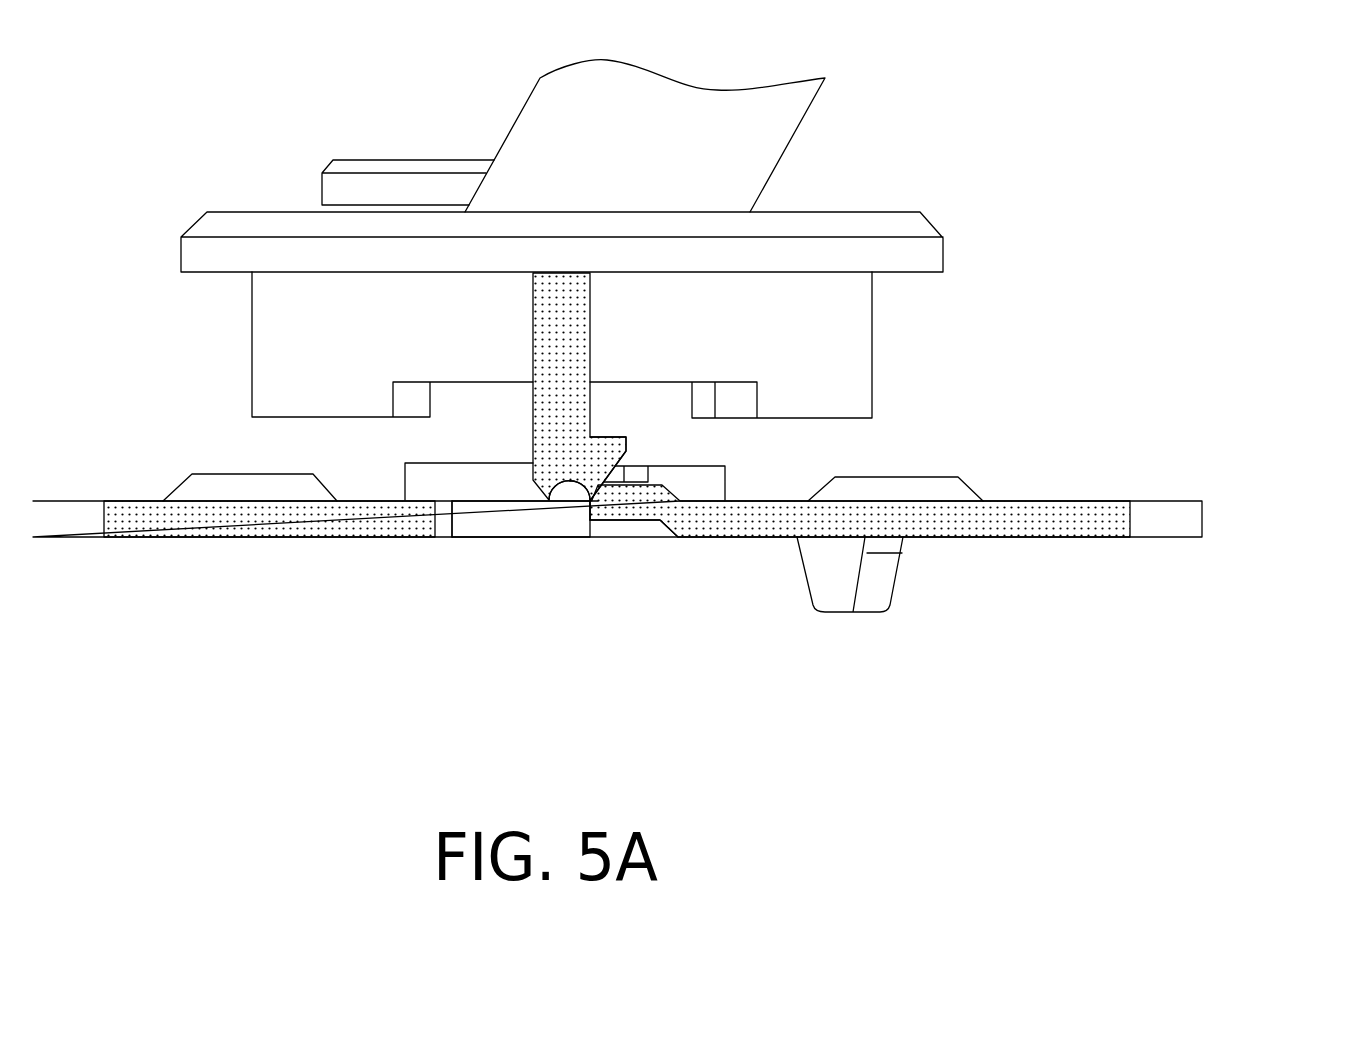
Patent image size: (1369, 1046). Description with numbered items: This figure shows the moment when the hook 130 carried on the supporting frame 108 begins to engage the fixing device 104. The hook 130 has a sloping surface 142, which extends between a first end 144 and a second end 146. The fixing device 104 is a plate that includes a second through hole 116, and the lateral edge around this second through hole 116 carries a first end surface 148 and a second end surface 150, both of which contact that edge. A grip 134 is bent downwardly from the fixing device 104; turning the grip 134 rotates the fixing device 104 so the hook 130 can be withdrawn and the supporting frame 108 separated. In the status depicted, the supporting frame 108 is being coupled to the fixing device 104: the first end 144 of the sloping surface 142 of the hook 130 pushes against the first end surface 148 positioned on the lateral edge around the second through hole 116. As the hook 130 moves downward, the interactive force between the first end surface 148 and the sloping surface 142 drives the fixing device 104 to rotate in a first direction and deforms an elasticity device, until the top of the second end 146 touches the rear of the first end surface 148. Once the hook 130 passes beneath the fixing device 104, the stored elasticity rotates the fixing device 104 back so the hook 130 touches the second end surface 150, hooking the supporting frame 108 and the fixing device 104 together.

The fixing device 104 is at (1202, 518).
The supporting frame 108 is at (770, 138).
The second through hole 116 is at (505, 555).
The hook 130 is at (562, 337).
The grip 134 is at (882, 582).
The sloping surface 142 is at (604, 478).
The first end 144 is at (551, 500).
The second end 146 is at (627, 452).
The first end surface 148 is at (590, 500).
The second end surface 150 is at (643, 520).